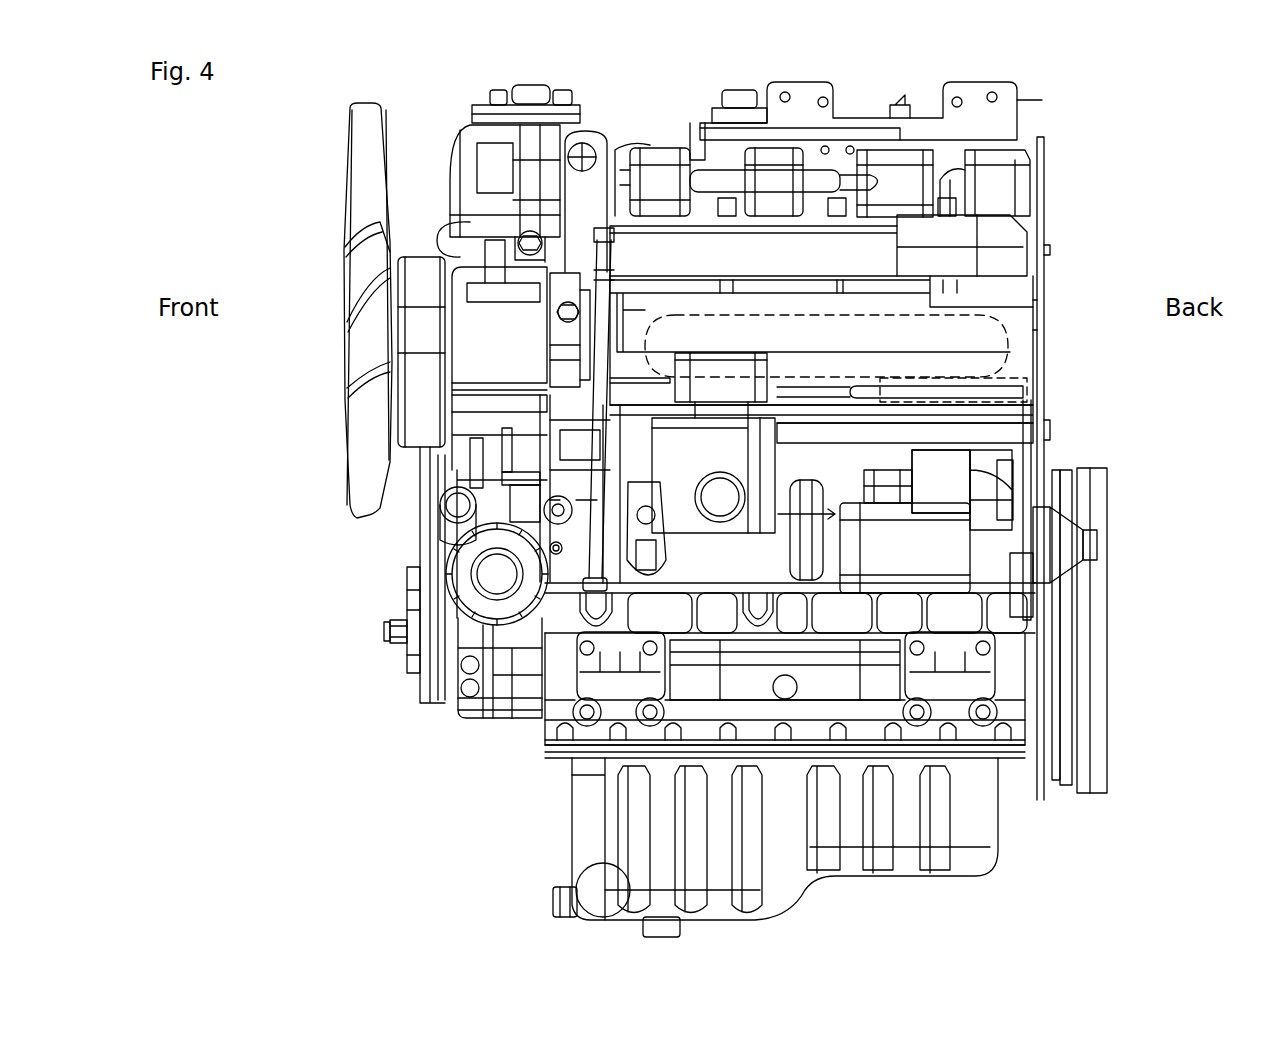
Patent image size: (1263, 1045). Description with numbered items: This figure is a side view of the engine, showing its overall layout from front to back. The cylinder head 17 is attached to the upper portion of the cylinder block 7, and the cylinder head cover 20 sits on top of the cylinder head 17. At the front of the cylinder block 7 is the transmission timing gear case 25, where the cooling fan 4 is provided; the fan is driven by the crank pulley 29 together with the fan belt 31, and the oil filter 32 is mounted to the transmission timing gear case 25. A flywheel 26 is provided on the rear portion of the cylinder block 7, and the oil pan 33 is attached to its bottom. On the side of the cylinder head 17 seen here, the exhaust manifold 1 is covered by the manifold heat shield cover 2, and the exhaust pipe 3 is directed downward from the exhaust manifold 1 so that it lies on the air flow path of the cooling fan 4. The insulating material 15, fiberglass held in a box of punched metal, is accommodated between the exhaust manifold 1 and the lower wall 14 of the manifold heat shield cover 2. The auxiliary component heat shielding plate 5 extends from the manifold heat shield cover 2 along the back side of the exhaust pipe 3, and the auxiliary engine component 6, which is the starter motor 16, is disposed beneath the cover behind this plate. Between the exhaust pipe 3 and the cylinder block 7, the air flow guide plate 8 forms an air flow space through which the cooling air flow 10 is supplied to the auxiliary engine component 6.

The exhaust manifold 1 is at (973, 342).
The manifold heat shield cover 2 is at (963, 303).
The exhaust pipe 3 is at (707, 450).
The cooling fan 4 is at (363, 207).
The auxiliary component heat shielding plate 5 is at (763, 453).
The auxiliary engine component 6 is at (917, 580).
The cylinder block 7 is at (963, 690).
The air flow guide plate 8 is at (667, 472).
The cooling air flow 10 is at (803, 507).
The lower wall 14 is at (983, 402).
The insulating material 15 is at (1010, 385).
The starter motor 16 is at (941, 481).
The cylinder head 17 is at (1040, 355).
The cylinder head cover 20 is at (993, 258).
The transmission timing gear case 25 is at (510, 670).
The flywheel 26 is at (1088, 763).
The crank pulley 29 is at (392, 633).
The fan belt 31 is at (427, 650).
The oil filter 32 is at (463, 572).
The oil pan 33 is at (957, 832).